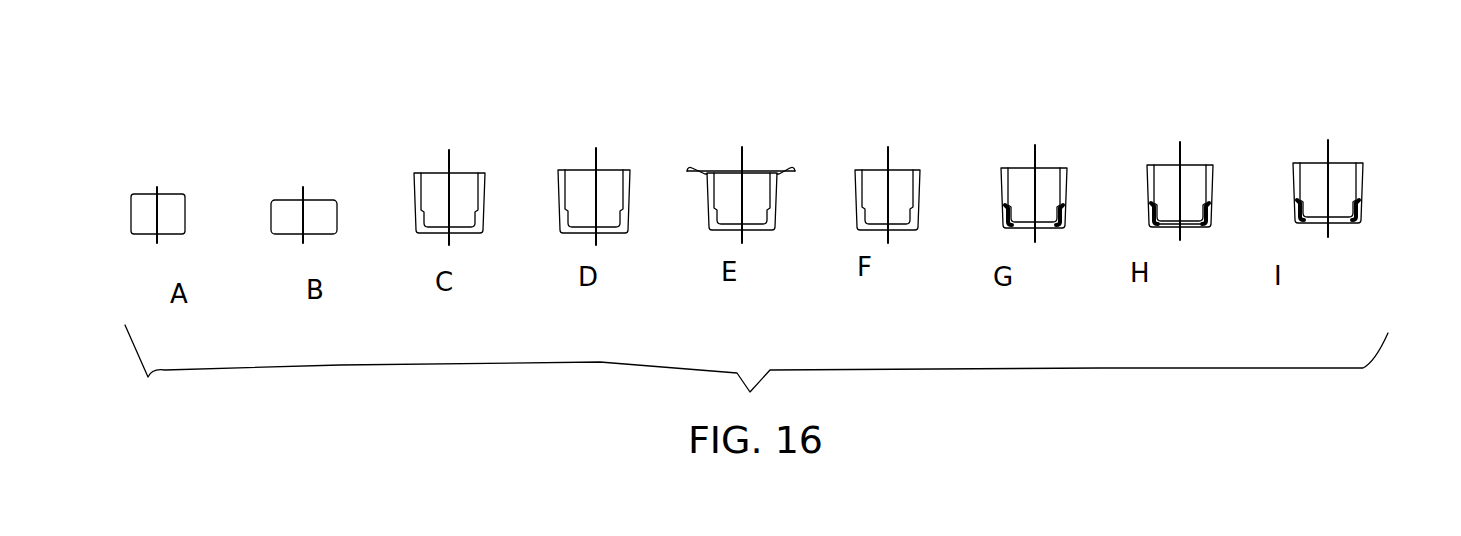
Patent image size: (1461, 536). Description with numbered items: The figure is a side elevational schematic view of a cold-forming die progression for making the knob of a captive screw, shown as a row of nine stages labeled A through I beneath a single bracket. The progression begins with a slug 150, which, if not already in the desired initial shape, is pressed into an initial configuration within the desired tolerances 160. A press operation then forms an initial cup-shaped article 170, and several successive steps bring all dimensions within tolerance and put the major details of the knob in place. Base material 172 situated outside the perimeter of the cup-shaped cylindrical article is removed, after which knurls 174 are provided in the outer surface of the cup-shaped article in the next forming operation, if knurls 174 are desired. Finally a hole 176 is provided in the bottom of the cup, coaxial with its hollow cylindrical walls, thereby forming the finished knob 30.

The slug 150 is at (180, 192).
The pressed slug within desired tolerances 160 is at (326, 197).
The cup-shaped article 170 is at (487, 177).
The base material 172 is at (690, 168).
The knurls 174 is at (1068, 202).
The hole 176 is at (1190, 228).
The knob 30 is at (1366, 173).